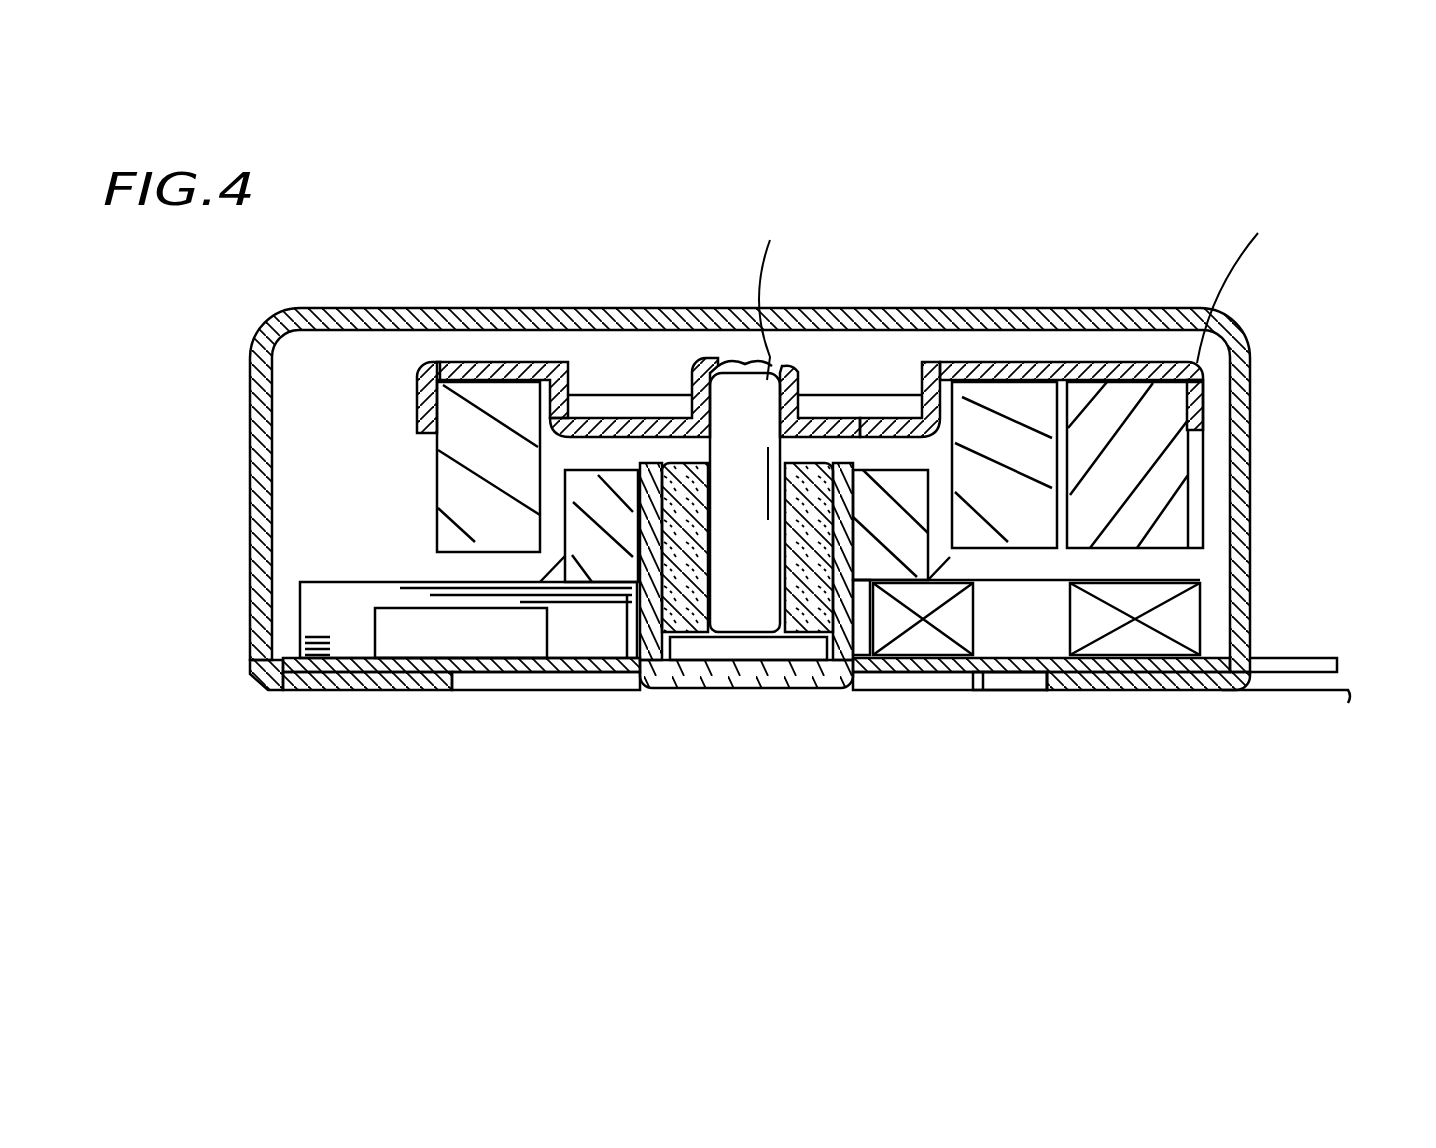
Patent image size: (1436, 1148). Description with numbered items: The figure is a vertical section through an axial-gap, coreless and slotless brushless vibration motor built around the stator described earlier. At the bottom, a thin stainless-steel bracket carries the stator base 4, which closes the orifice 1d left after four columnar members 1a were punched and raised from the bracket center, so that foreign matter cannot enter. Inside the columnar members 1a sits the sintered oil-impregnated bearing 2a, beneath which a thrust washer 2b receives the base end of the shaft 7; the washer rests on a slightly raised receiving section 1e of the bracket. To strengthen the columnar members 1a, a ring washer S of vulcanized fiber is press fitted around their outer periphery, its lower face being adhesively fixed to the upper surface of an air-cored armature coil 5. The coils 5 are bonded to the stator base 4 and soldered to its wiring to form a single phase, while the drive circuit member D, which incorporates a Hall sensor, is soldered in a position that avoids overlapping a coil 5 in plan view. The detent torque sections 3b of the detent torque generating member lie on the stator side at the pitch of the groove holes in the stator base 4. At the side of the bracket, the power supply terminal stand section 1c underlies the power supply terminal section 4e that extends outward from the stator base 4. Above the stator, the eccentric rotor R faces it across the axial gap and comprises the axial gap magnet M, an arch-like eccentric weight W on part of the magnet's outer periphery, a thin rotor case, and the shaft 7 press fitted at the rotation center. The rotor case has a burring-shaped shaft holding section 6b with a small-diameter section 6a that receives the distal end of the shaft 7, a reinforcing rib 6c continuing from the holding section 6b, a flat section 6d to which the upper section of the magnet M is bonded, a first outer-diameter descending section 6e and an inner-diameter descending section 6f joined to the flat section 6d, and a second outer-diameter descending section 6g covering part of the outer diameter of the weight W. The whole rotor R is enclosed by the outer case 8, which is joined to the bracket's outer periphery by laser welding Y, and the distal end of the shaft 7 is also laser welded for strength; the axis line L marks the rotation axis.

The outer case 8 is at (250, 440).
The stator base 4 is at (325, 685).
The power supply terminal section 4e is at (1310, 656).
The laser welding Y is at (246, 668).
The columnar members 1a is at (658, 470).
The power supply terminal stand section 1c is at (1293, 690).
The orifice 1d is at (597, 684).
The receiving section 1e is at (740, 642).
The sintered oil-impregnated bearing 2a is at (815, 468).
The thrust washer 2b is at (715, 647).
The detent torque sections 3b is at (977, 663).
The air-cored armature coils 5 is at (330, 600).
The drive circuit member D is at (405, 635).
The ring washer S is at (603, 480).
The axial gap magnet M is at (1023, 527).
The eccentric weight W is at (1167, 483).
The shaft 7 is at (737, 560).
The axis line L is at (764, 284).
The small-diameter section 6a is at (730, 363).
The shaft holding section 6b is at (797, 380).
The reinforcing rib 6c is at (903, 385).
The flat section 6d is at (1015, 365).
The first outer-diameter descending section 6e is at (417, 400).
The inner-diameter descending section 6f is at (482, 372).
The second outer-diameter descending section 6g is at (1232, 388).
The eccentric rotor R is at (1193, 349).